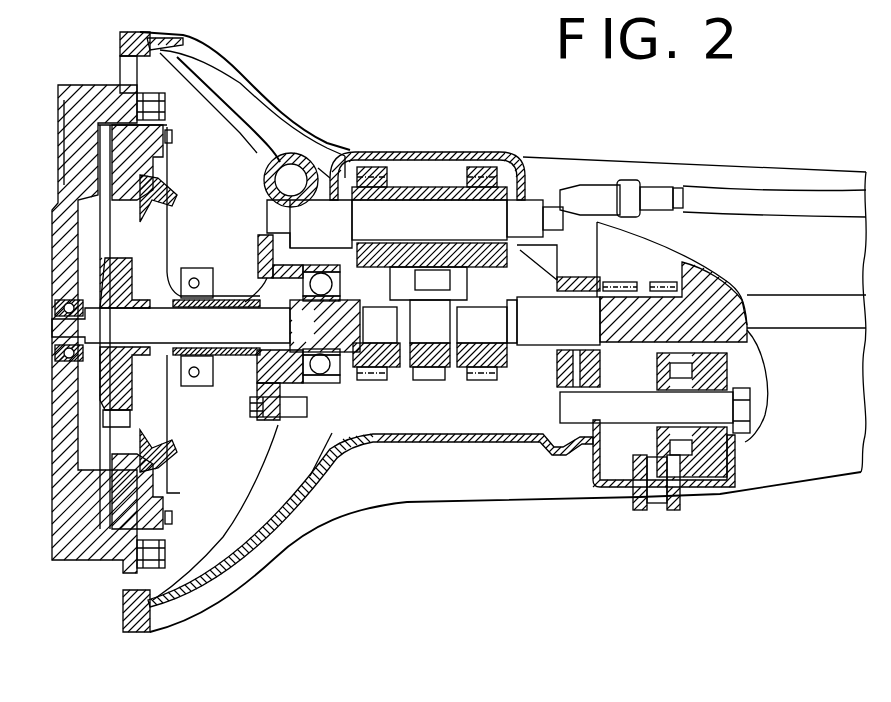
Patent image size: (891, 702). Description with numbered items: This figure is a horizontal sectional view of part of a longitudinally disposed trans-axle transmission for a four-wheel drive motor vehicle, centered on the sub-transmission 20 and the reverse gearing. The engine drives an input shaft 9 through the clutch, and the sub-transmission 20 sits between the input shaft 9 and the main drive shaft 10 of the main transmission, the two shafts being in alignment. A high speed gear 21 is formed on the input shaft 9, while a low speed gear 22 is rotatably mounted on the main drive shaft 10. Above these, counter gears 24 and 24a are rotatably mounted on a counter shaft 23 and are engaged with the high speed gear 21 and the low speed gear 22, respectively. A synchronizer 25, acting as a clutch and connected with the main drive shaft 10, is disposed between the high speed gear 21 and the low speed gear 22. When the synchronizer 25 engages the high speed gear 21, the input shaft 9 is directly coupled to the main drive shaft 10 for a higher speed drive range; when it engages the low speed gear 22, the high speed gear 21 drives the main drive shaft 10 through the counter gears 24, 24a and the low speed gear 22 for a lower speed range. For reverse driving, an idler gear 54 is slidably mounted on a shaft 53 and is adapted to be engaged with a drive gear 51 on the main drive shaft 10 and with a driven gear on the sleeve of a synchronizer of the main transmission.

The input shaft 9 is at (294, 338).
The main drive shaft 10 is at (539, 331).
The sub-transmission 20 is at (432, 177).
The high speed gear 21 is at (382, 383).
The low speed gear 22 is at (503, 383).
The counter shaft 23 is at (303, 235).
The counter gear 24 is at (374, 165).
The counter gear 24a is at (487, 153).
The synchronizer 25 is at (433, 383).
The drive gear 51 is at (654, 283).
The shaft 53 is at (633, 403).
The idler gear 54 is at (713, 485).